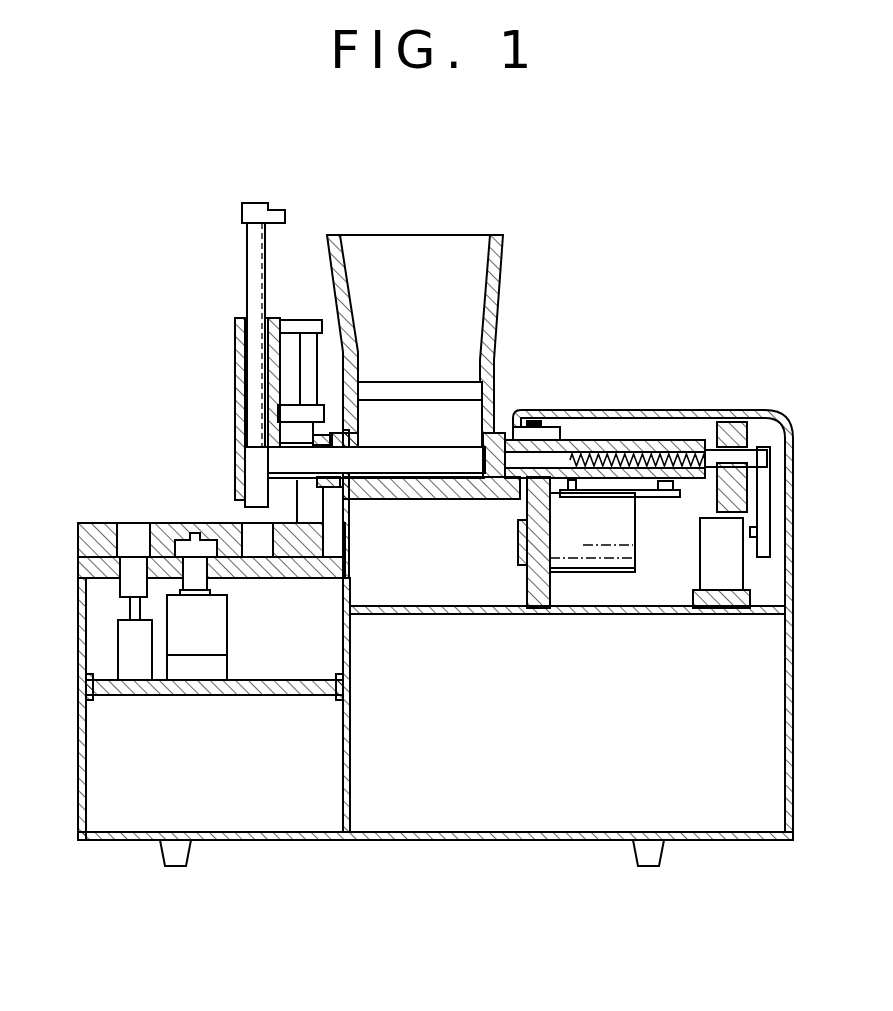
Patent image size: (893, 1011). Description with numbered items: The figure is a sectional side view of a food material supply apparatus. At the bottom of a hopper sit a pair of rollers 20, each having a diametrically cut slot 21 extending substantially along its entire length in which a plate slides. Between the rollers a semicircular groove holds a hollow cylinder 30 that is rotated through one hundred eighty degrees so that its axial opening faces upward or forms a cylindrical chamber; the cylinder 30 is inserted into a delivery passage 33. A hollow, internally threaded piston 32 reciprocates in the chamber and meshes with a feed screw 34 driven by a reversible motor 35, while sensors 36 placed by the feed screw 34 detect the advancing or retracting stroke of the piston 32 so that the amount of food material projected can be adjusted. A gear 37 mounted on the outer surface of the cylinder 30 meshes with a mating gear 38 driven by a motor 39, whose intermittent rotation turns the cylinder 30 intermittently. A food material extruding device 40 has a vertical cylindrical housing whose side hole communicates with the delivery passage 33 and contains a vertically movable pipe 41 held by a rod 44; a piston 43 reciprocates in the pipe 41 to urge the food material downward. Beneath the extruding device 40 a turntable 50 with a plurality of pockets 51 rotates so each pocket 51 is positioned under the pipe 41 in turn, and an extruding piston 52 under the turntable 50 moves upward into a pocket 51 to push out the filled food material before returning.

The roller 20 is at (425, 418).
The slot 21 is at (447, 388).
The hollow cylinder 30 is at (452, 462).
The piston 32 is at (606, 448).
The delivery passage 33 is at (300, 486).
The feed screw 34 is at (688, 450).
The reversible motor 35 is at (732, 568).
The sensors 36 is at (656, 497).
The gear 37 is at (548, 432).
The mating gear 38 is at (530, 548).
The motor 39 is at (583, 565).
The food material extruding device 40 is at (224, 435).
The pipe 41 is at (243, 380).
The piston 43 is at (250, 266).
The rod 44 is at (306, 360).
The turntable 50 is at (171, 524).
The pocket 51 is at (131, 525).
The extruding piston 52 is at (123, 592).